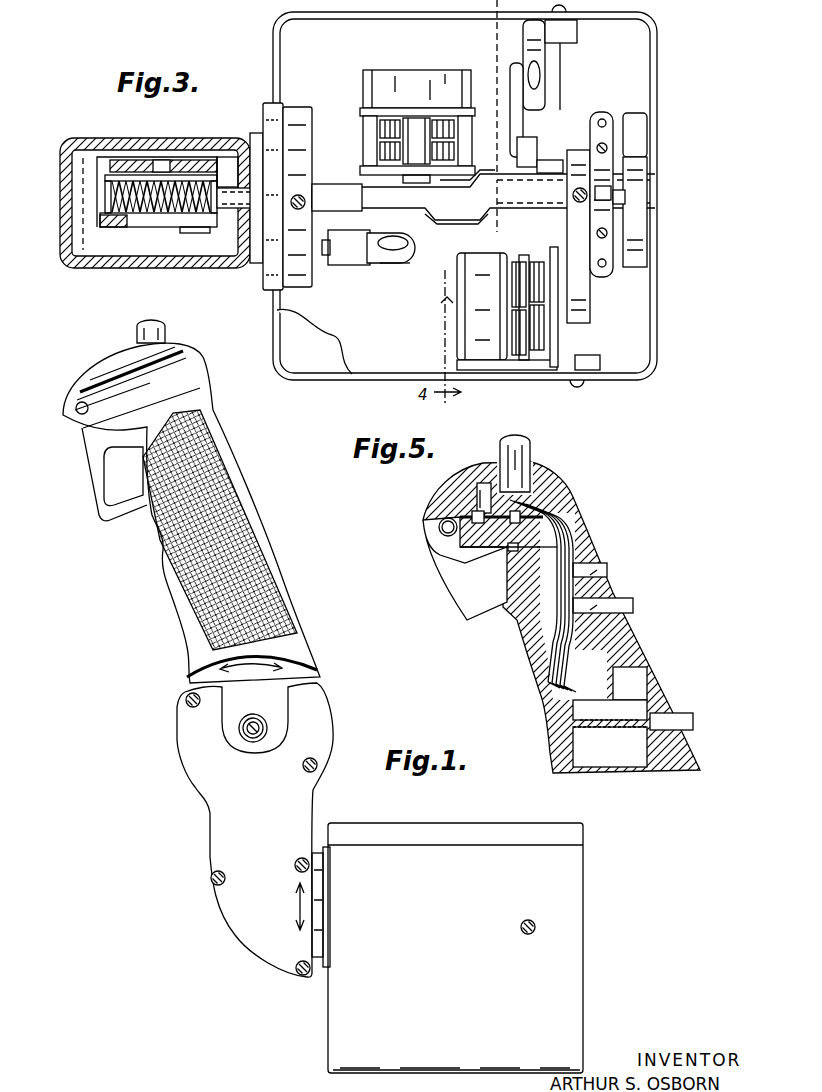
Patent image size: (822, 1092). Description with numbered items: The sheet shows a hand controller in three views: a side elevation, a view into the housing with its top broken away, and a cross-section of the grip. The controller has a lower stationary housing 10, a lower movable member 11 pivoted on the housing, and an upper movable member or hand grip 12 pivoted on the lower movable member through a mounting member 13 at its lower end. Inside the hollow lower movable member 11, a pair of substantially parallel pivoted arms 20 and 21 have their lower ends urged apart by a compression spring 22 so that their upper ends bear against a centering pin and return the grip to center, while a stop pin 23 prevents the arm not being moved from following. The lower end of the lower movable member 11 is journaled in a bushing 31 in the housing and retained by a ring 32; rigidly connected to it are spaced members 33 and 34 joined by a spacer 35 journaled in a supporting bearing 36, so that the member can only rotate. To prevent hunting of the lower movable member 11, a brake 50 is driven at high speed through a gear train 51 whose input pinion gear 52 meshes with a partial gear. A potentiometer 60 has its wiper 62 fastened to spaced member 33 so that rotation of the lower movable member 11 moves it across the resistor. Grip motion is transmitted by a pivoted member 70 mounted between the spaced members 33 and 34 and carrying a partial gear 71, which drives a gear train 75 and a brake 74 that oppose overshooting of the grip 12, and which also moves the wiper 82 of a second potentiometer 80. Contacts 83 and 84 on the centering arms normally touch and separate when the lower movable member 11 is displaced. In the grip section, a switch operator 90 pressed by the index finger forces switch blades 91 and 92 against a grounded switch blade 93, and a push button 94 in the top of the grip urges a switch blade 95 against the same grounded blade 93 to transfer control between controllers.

In FIG. 3, the lower stationary housing 10 is at (293, 332).
In FIG. 1, the lower stationary housing 10 is at (565, 880).
In FIG. 3, the lower movable member 11 is at (62, 182).
In FIG. 1, the lower movable member 11 is at (227, 828).
In FIG. 1, the hand grip 12 is at (285, 558).
In FIG. 5, the hand grip 12 is at (645, 633).
In FIG. 1, the mounting member 13 is at (318, 680).
In FIG. 3, the arm 20 is at (113, 167).
In FIG. 3, the arm 21 is at (212, 160).
In FIG. 3, the compression spring 22 is at (141, 203).
In FIG. 3, the stop pin 23 is at (165, 166).
In FIG. 3, the bushing 31 is at (285, 106).
In FIG. 3, the ring 32 is at (300, 113).
In FIG. 3, the spaced member 33 is at (480, 178).
In FIG. 3, the spaced member 34 is at (480, 214).
In FIG. 3, the spacer 35 is at (534, 202).
In FIG. 3, the supporting bearing 36 is at (637, 188).
In FIG. 3, the brake 50 is at (445, 305).
In FIG. 3, the gear train 51 is at (574, 338).
In FIG. 3, the pinion gear 52 is at (594, 308).
In FIG. 3, the potentiometer 60 is at (511, 43).
In FIG. 3, the wiper 62 is at (517, 118).
In FIG. 3, the pivoted member 70 is at (234, 209).
In FIG. 3, the partial gear 71 is at (324, 196).
In FIG. 3, the brake 74 is at (419, 54).
In FIG. 3, the gear train 75 is at (359, 134).
In FIG. 3, the potentiometer 80 is at (394, 279).
In FIG. 3, the wiper 82 is at (375, 268).
In FIG. 3, the contact 83 is at (610, 193).
In FIG. 3, the contact 84 is at (626, 198).
In FIG. 1, the switch operator 90 is at (100, 485).
In FIG. 5, the switch operator 90 is at (463, 587).
In FIG. 5, the switch blade 91 is at (537, 549).
In FIG. 5, the switch blade 92 is at (577, 523).
In FIG. 5, the switch blade 93 is at (573, 509).
In FIG. 1, the push button 94 is at (167, 333).
In FIG. 5, the push button 94 is at (530, 444).
In FIG. 5, the switch blade 95 is at (567, 491).